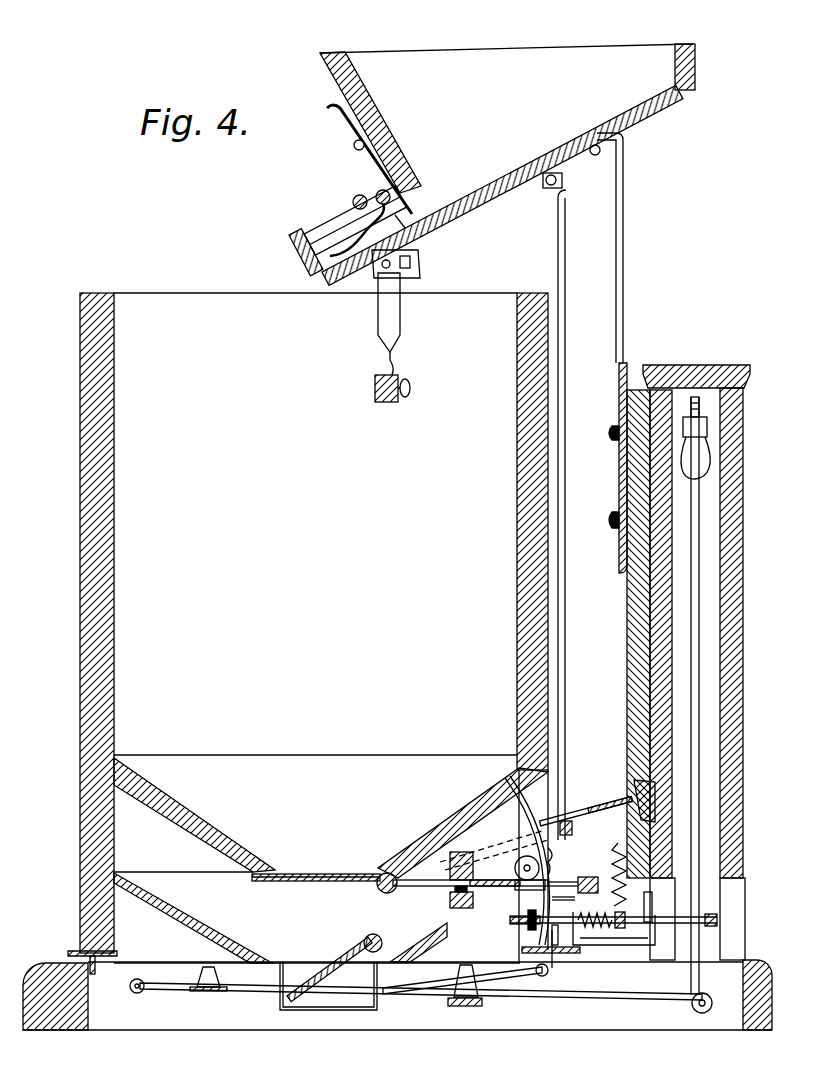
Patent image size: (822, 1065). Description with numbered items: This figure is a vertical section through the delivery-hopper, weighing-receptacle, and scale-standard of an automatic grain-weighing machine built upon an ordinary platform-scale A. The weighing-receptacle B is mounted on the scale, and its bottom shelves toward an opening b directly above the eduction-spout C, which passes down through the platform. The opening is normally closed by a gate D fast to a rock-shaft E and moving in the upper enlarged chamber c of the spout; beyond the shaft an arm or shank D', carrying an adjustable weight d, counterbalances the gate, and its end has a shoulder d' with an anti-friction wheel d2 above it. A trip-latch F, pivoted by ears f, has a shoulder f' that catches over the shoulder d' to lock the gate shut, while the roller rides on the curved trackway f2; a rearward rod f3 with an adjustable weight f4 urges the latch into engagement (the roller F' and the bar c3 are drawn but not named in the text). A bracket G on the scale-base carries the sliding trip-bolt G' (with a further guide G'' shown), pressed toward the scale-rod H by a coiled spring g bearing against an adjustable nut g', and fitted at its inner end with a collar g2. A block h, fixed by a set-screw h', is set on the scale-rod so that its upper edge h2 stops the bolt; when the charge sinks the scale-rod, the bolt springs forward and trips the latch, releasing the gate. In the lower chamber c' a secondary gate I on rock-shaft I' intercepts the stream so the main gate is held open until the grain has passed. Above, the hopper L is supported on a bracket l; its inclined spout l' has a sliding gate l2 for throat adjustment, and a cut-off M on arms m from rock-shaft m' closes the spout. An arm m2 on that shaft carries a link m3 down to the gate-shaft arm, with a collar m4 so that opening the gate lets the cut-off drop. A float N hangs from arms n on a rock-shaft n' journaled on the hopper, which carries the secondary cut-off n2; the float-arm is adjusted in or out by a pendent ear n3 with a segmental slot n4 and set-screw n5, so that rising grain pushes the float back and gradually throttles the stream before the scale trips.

The hopper L is at (507, 164).
The bracket l is at (612, 353).
The spout l' is at (395, 224).
The sliding gate l2 is at (412, 210).
The cut-off M is at (292, 255).
The arms m is at (355, 220).
The rock-shaft m' is at (343, 195).
The arm m2 is at (533, 188).
The link m3 is at (576, 515).
The adjustable collar or nut m4 is at (574, 828).
The arm n is at (389, 324).
The rock-shaft n' is at (378, 187).
The secondary cut-off n2 is at (357, 230).
The pendent ear or plate n3 is at (412, 254).
The segmental slot n4 is at (410, 262).
The set-screw n5 is at (387, 274).
The float N is at (382, 388).
The weighing-receptacle B is at (308, 633).
The eduction-spout C is at (317, 917).
The upper enlarged chamber c is at (366, 942).
The lower chamber c' is at (328, 986).
The lever c3 is at (582, 815).
The secondary gate I is at (329, 969).
The rock-shaft I' is at (361, 935).
The opening b is at (316, 866).
The gate D is at (316, 890).
The arm or shank D' is at (470, 894).
The rock-shaft E is at (387, 896).
The adjustable weight d is at (461, 855).
The shoulder d' is at (487, 901).
The anti-friction wheel d2 is at (518, 868).
The trip-latch F is at (527, 860).
The roller F' is at (529, 866).
The ears f is at (564, 861).
The shoulder f' is at (563, 876).
The curved inner face or trackway f2 is at (545, 808).
The arm or rod f3 is at (563, 902).
The adjustable weight f4 is at (602, 874).
The coiled spring g is at (613, 911).
The adjustable nut g' is at (617, 911).
The adjustable collar g2 is at (528, 926).
The bracket G is at (588, 948).
The trip-bolt G' is at (657, 907).
The guide G'' is at (563, 937).
The scale-rod H is at (658, 800).
The block h is at (698, 705).
The set-screw h' is at (725, 913).
The upper edge h2 is at (690, 928).
The platform-scale A is at (397, 697).